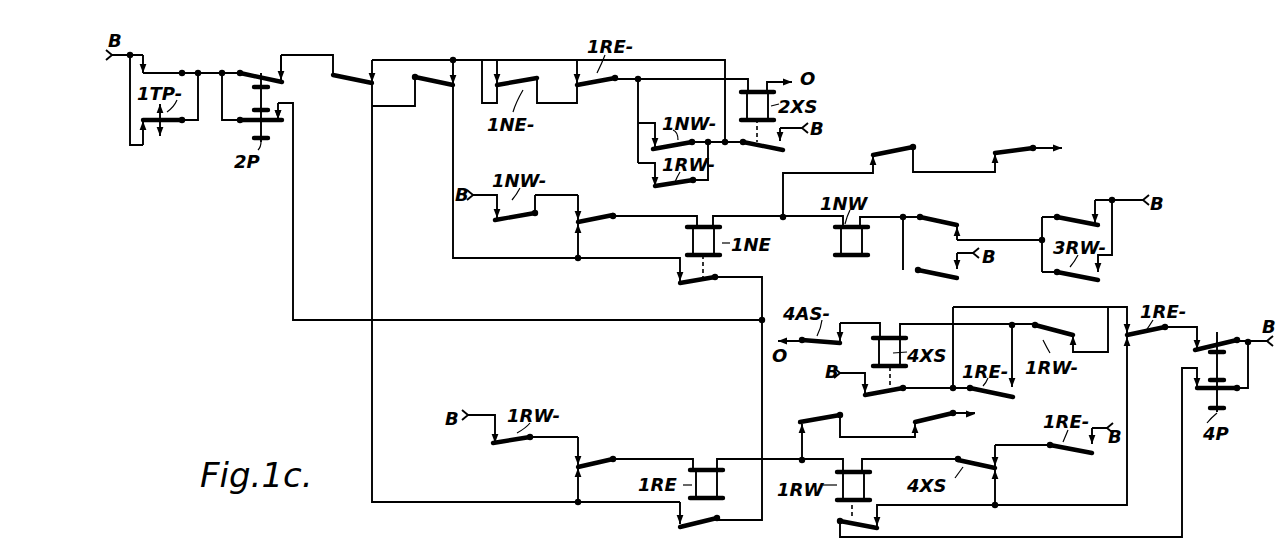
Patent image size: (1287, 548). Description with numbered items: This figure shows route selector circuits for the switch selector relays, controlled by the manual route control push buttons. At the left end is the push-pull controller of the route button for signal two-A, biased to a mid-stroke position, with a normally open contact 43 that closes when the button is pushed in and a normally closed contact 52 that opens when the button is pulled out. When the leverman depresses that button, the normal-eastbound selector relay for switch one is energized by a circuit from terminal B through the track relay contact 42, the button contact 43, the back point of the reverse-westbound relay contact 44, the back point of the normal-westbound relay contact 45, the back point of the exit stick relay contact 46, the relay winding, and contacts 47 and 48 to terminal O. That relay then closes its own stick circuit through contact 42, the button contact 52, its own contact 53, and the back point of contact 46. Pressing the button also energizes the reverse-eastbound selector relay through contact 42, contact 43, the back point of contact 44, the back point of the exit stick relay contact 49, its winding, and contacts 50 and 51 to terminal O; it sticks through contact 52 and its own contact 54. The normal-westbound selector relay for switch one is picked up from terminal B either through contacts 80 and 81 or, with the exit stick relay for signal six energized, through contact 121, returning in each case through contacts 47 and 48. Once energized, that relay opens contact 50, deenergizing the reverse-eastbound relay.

The contact 1TR— 42 is at (172, 54).
The normally open contact of controller 2P 43 is at (250, 68).
The contact 1RW— 44 is at (355, 55).
The contact 1NW— 45 is at (440, 55).
The contact 2XS— 46 is at (596, 212).
The contact 1RW— 47 is at (900, 140).
The contact 1RWK— 48 is at (1023, 140).
The contact 2XS— 49 is at (598, 456).
The contact 1NW— 50 is at (815, 411).
The contact 1NWK— 51 is at (917, 425).
The normally closed contact of controller 2P 52 is at (250, 105).
The contact of relay 1NE 53 is at (687, 285).
The contact of relay 1RE 54 is at (678, 523).
The contact 3NW— 80 is at (1080, 198).
The contact 6PBS— 81 is at (950, 209).
The contact 6XS— 121 is at (949, 282).